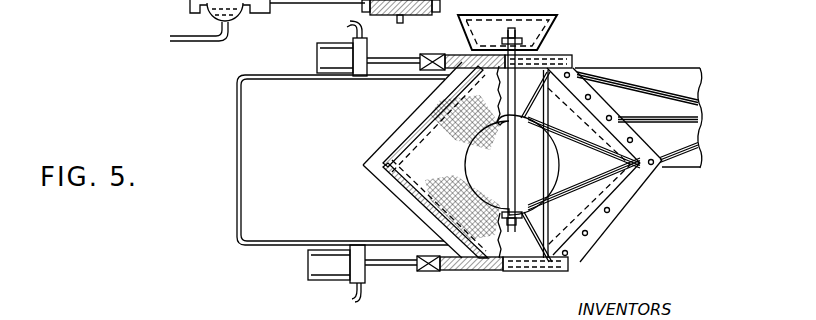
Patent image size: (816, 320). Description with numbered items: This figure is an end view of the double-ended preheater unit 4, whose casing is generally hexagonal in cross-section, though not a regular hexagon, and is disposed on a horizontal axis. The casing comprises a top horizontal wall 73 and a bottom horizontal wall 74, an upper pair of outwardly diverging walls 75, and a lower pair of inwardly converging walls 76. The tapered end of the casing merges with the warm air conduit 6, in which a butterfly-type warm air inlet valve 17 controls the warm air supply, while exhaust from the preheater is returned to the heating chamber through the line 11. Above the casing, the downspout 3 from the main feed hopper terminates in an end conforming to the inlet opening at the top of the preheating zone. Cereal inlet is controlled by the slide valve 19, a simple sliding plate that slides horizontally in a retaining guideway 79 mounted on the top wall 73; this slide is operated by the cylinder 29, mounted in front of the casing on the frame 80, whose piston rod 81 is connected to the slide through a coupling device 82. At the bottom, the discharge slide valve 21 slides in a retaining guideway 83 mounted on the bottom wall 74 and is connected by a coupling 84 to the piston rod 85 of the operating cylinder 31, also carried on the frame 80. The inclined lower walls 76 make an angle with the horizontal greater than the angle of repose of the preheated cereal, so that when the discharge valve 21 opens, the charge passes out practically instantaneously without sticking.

The downspout 3 is at (533, 27).
The preheater unit 4 is at (575, 200).
The warm air conduit 6 is at (573, 240).
The exhaust line 11 is at (657, 72).
The warm air inlet valve 17 is at (517, 178).
The preheater inlet slide valve 19 is at (458, 56).
The preheater outlet slide valve 21 is at (465, 272).
The operating cylinder 29 is at (320, 51).
The operating cylinder 31 is at (330, 273).
The top horizontal wall 73 is at (493, 68).
The bottom horizontal wall 74 is at (492, 220).
The upper outwardly diverging wall 75 is at (445, 104).
The lower inwardly converging wall 76 is at (422, 204).
The retaining guideway 79 is at (563, 62).
The frame 80 is at (237, 82).
The piston rod 81 is at (383, 58).
The coupling device 82 is at (428, 55).
The retaining guideway 83 is at (535, 273).
The coupling 84 is at (430, 272).
The piston rod 85 is at (388, 268).